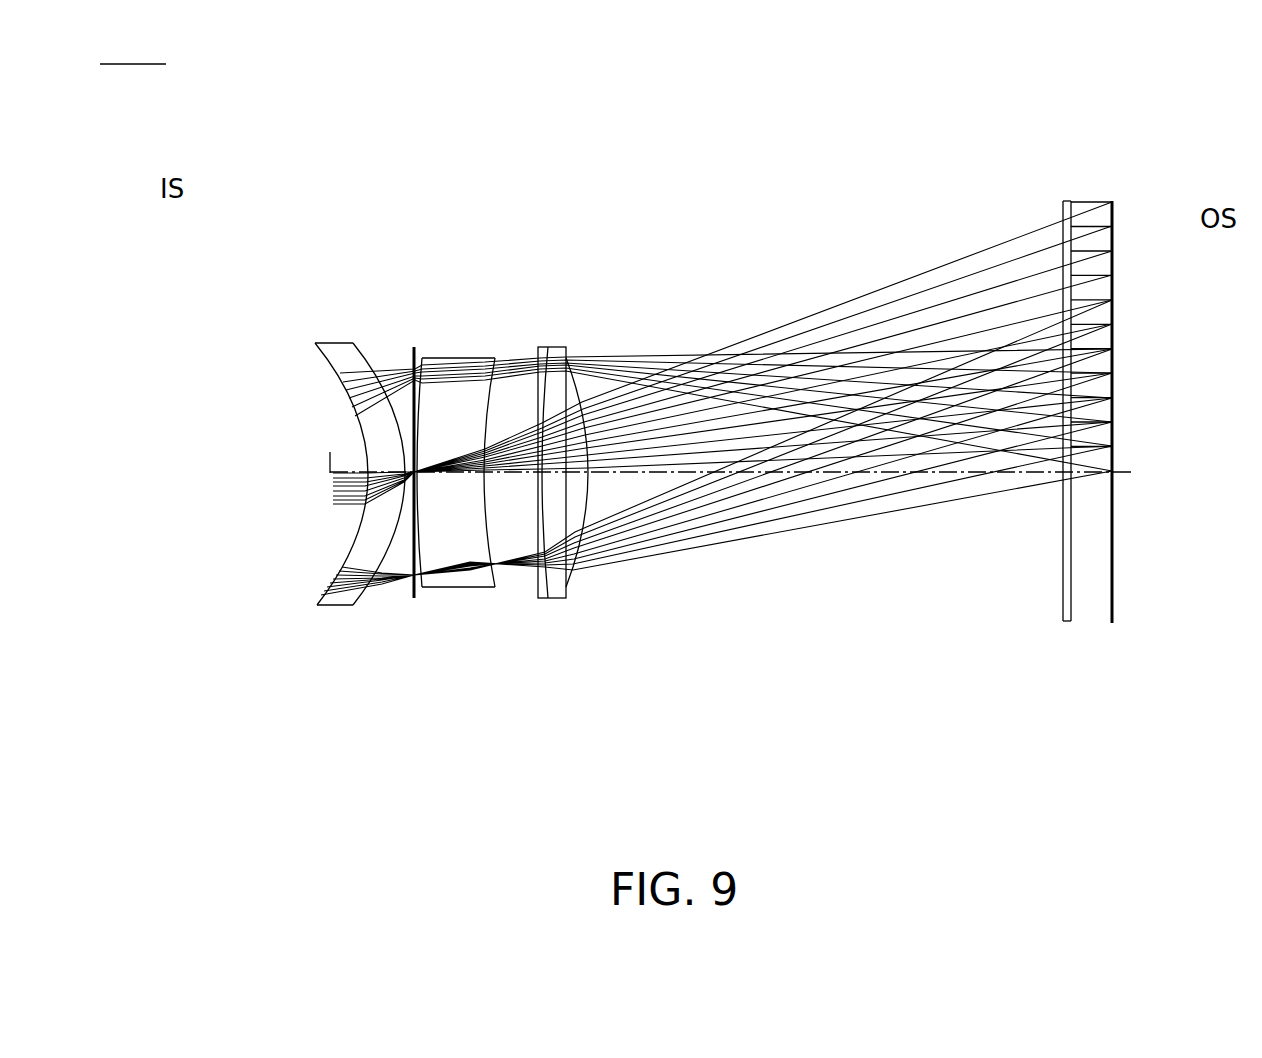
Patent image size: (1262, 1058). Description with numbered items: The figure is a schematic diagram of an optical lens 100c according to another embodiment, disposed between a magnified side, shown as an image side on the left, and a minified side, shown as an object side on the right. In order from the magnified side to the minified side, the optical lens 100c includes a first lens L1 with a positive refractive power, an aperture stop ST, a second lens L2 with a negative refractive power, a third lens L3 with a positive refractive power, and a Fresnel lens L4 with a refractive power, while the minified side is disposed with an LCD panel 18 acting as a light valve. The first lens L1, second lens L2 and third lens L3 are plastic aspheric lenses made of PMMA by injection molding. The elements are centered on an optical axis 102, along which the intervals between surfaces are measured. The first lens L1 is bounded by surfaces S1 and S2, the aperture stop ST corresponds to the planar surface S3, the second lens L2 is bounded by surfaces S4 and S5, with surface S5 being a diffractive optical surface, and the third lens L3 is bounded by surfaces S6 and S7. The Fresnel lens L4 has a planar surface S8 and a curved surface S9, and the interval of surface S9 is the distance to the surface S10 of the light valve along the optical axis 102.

The optical lens 100c is at (133, 49).
The optical axis 102 is at (330, 472).
The LCD panel (light valve) 18 is at (1128, 424).
The first lens L1 is at (327, 451).
The second lens L2 is at (461, 462).
The third lens L3 is at (572, 466).
The Fresnel lens L4 is at (1055, 393).
The aperture stop ST is at (406, 462).
The surface S1 is at (335, 548).
The surface S2 is at (398, 578).
The surface S3 is at (413, 565).
The surface S4 is at (420, 580).
The surface S5 is at (500, 580).
The surface S6 is at (538, 598).
The surface S7 is at (570, 580).
The surface S8 is at (1063, 567).
The surface S9 is at (1072, 568).
The surface S10 is at (1113, 568).